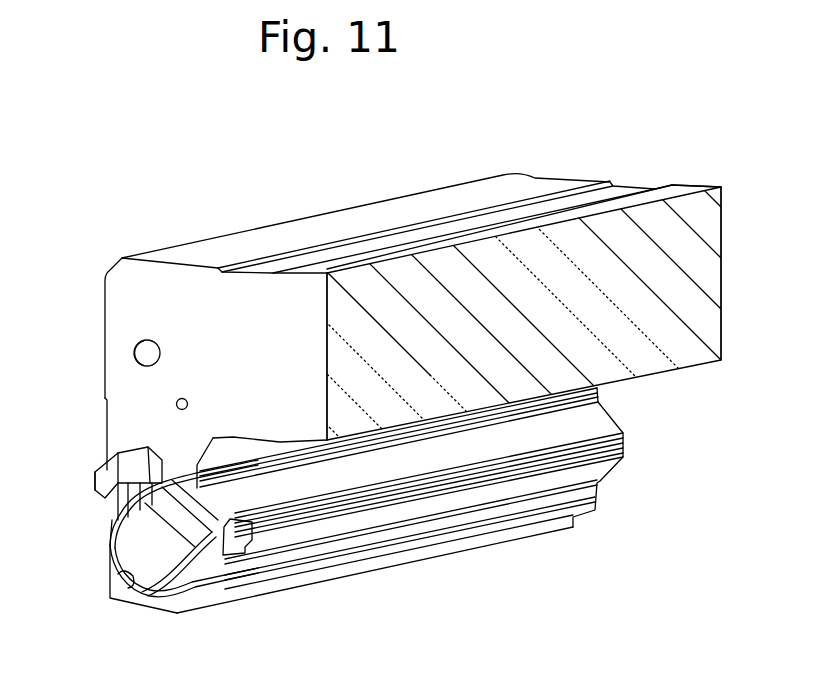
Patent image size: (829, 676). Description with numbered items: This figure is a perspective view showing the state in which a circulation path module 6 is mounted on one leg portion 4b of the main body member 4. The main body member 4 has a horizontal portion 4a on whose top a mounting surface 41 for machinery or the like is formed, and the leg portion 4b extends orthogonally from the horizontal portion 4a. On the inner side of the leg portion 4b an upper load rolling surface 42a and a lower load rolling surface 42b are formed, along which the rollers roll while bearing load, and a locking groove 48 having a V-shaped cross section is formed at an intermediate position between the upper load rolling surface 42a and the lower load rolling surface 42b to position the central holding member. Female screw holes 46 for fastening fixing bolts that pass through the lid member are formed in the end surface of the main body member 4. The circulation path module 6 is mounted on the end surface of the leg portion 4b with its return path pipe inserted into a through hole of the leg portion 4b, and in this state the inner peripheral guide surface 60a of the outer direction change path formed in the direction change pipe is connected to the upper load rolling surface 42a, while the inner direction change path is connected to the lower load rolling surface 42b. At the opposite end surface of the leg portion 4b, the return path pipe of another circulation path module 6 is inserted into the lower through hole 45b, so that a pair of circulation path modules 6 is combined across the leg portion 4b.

The main body member 4 is at (306, 198).
The mounting surface 41 is at (415, 206).
The horizontal portion 4a is at (723, 215).
The female screw holes 46 is at (177, 402).
The circulation path module 6 is at (93, 463).
The inner peripheral guide surface 60a is at (148, 544).
The lower through hole 45b is at (123, 577).
The locking groove 48 is at (590, 462).
The upper load rolling surface 42a is at (490, 455).
The lower load rolling surface 42b is at (415, 512).
The leg portion 4b is at (332, 583).